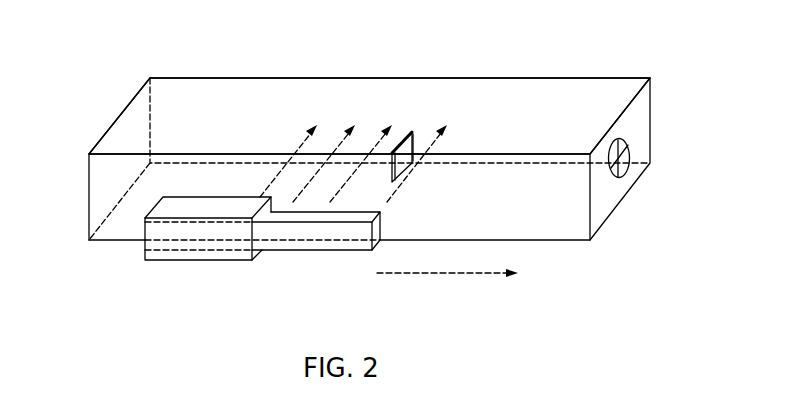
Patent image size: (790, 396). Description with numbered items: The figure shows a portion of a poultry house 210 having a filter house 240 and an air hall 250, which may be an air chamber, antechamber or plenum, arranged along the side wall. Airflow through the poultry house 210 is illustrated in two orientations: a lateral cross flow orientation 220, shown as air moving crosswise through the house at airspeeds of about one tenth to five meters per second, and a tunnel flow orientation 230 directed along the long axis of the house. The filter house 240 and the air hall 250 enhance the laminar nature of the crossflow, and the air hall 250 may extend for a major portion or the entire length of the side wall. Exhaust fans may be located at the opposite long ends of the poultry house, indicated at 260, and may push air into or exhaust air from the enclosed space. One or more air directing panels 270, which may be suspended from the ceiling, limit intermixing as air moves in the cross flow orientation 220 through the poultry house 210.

The poultry house 210 is at (250, 78).
The cross flow orientation 220 is at (566, 92).
The tunnel flow orientation 230 is at (447, 275).
The filter house 240 is at (198, 257).
The air hall 250 is at (308, 247).
The exhaust fan location 260 is at (605, 198).
The air directing panels 270 is at (404, 132).